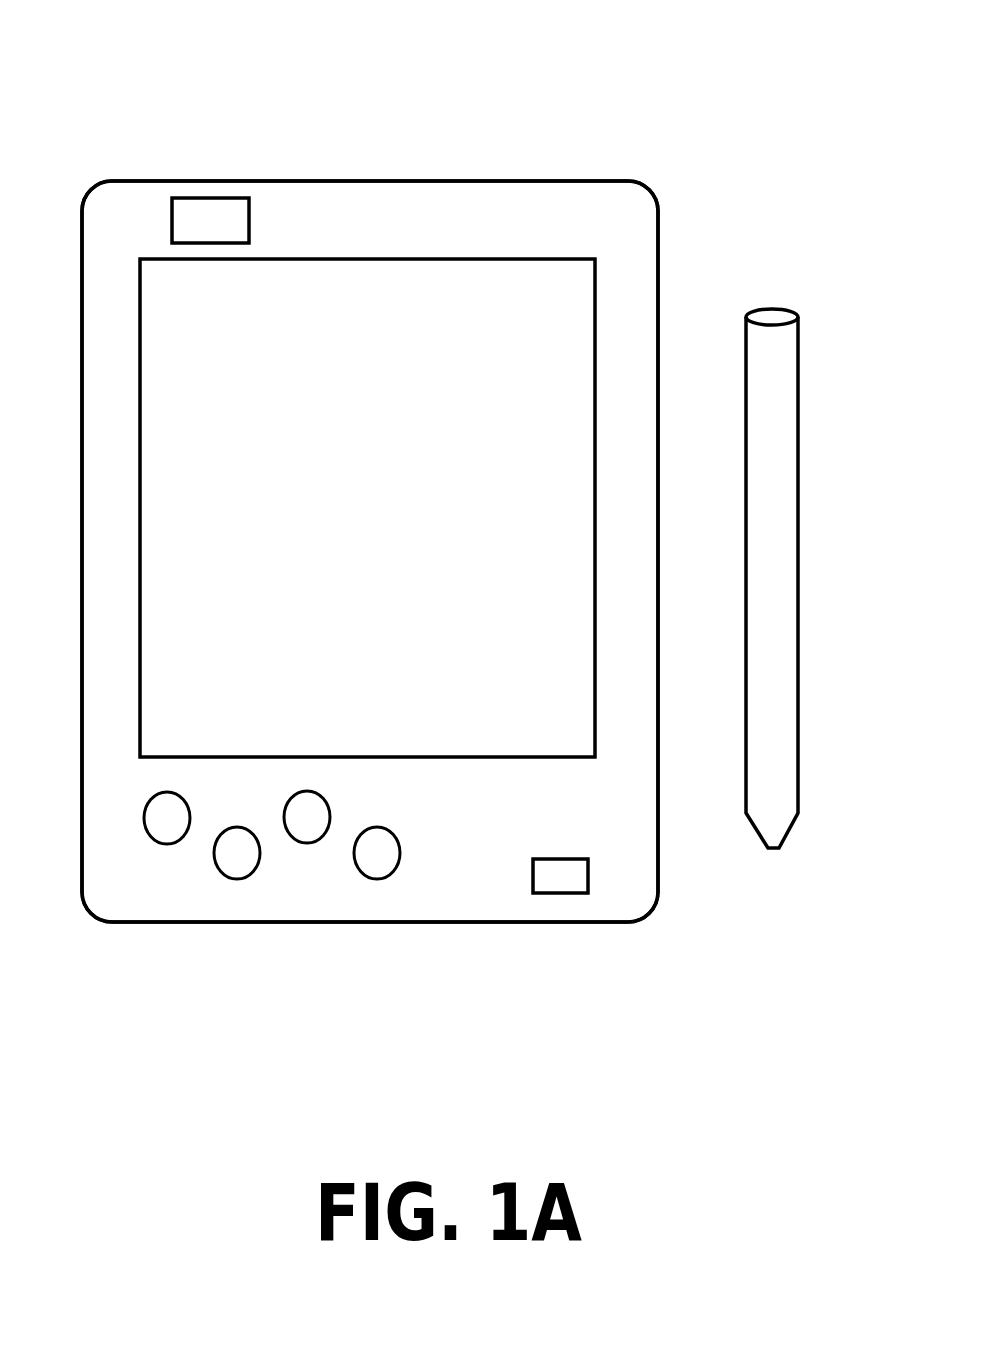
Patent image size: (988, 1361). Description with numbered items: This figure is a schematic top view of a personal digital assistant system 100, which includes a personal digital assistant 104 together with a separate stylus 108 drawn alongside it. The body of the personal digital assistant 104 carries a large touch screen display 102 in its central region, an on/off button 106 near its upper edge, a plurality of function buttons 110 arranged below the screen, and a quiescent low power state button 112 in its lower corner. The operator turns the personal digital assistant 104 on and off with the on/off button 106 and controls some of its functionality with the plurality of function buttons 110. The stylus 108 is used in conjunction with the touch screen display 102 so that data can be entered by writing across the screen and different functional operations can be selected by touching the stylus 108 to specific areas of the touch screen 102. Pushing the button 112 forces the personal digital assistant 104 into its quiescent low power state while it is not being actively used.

The personal digital assistant system 100 is at (66, 26).
The touch screen display 102 is at (395, 512).
The personal digital assistant 104 is at (590, 181).
The on/off button 106 is at (200, 198).
The stylus 108 is at (800, 629).
The plurality of function buttons 110 is at (377, 879).
The quiescent low power state button 112 is at (560, 893).